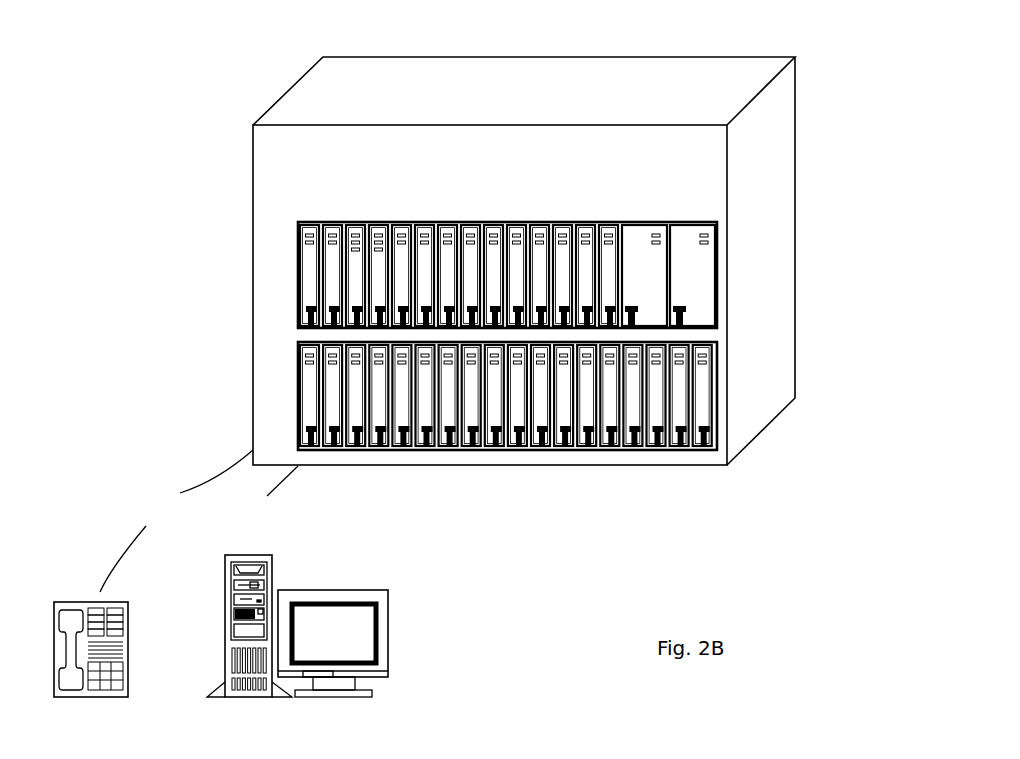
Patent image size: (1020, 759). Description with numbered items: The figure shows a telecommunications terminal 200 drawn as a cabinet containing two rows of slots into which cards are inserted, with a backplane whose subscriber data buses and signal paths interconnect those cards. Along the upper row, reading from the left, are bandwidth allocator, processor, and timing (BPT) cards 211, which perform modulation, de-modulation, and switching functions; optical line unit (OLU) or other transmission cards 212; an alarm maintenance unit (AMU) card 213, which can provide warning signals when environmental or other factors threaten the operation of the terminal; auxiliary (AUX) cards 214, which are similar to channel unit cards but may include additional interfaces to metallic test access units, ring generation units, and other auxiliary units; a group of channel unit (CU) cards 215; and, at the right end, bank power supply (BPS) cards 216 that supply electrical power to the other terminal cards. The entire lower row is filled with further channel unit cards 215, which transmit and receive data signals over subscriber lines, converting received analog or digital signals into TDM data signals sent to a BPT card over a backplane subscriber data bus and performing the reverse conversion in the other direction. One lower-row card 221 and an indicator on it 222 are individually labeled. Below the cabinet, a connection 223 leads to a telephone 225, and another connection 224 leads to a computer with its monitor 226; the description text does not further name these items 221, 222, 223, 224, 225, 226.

The telecommunications terminal 200 is at (797, 147).
The bandwidth allocator, processor, and timing (BPT) cards 211 is at (342, 218).
The optical line unit (OLU) cards 212 is at (390, 218).
The alarm maintenance unit (AMU) cards 213 is at (403, 228).
The auxiliary (AUX) cards 214 is at (482, 218).
The channel unit (CU) cards 215 is at (620, 218).
The bank power supply (BPS) cards 216 is at (715, 218).
The CU card slot 221 is at (307, 367).
The LED indicator 222 is at (333, 355).
The telephone cable 223 is at (176, 521).
The personal computer 224 is at (245, 555).
The telephone 225 is at (92, 603).
The monitor 226 is at (335, 590).